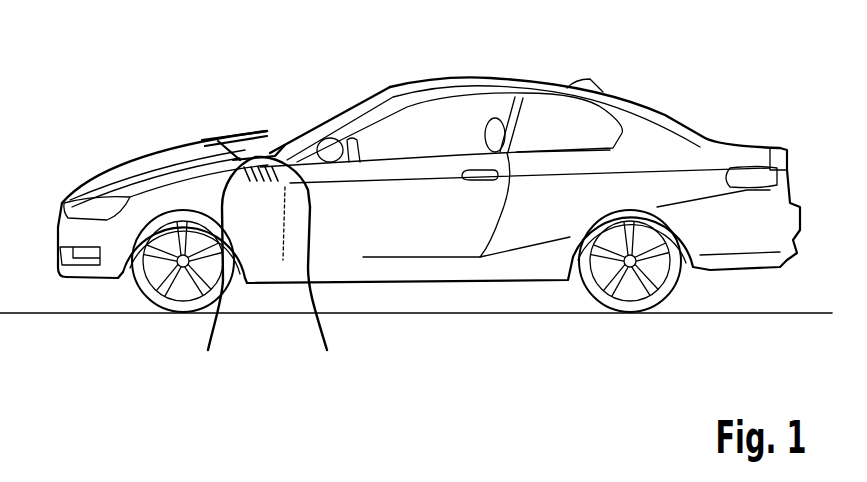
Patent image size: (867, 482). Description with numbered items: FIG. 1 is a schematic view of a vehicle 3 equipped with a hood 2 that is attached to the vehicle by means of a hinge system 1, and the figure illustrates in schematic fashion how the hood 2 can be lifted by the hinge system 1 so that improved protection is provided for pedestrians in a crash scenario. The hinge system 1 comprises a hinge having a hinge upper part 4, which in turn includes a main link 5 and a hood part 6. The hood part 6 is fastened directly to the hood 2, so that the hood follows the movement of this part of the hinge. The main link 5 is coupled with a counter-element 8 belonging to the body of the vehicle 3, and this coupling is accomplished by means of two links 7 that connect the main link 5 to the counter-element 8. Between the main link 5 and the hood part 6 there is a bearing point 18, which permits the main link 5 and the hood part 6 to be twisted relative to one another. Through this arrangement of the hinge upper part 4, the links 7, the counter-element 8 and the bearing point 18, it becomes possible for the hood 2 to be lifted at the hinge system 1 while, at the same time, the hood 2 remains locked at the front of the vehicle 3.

The hinge system 1 is at (429, 164).
The hood 2 is at (164, 133).
The vehicle 3 is at (585, 82).
The hinge upper part 4 is at (241, 85).
The main link 5 is at (259, 111).
The hood part 6 is at (219, 111).
The links 7 is at (268, 272).
The counter-element 8 is at (261, 277).
The bearing point 18 is at (199, 104).